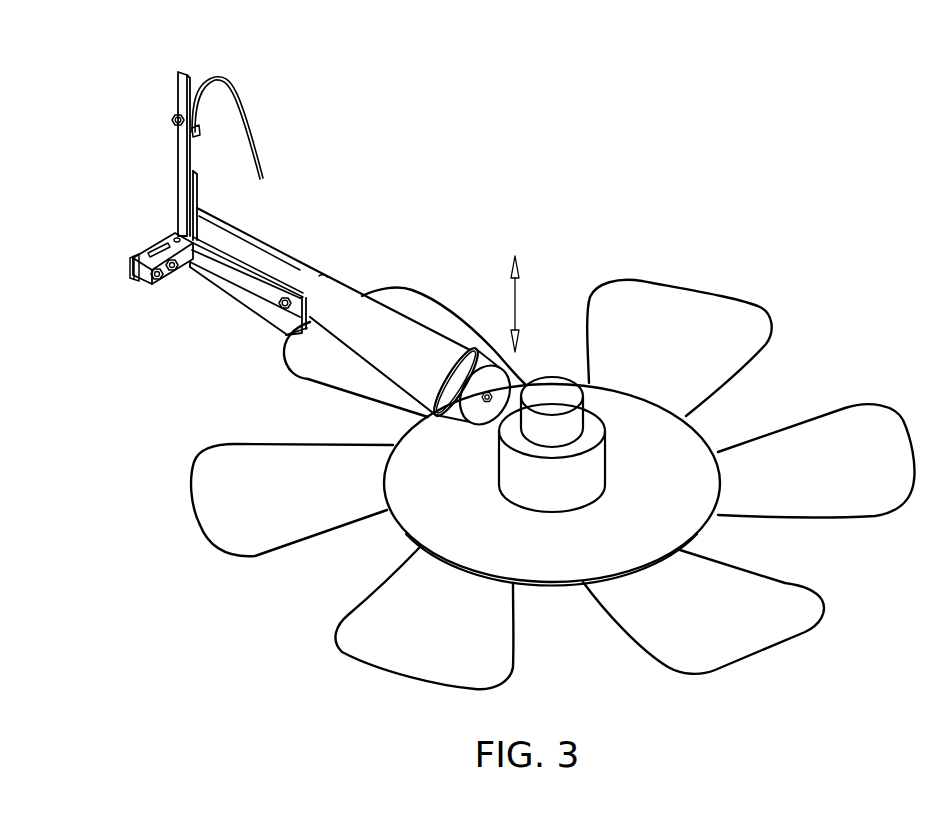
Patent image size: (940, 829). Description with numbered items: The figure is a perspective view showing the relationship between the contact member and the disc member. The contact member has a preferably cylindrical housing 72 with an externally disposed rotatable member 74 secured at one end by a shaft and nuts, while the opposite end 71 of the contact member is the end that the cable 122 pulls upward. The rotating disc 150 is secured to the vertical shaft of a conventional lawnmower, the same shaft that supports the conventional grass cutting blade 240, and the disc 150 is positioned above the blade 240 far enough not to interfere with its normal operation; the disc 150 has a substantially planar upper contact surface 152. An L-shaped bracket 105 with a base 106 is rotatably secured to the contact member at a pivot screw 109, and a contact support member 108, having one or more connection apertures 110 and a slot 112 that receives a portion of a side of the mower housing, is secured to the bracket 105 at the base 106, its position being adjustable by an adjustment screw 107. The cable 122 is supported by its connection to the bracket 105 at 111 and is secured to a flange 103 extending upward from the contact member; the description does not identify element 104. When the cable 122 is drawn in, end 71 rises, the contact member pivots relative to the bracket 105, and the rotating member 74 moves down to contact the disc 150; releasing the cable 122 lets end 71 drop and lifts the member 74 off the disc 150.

The end of contact member 71 is at (202, 212).
The housing 72 is at (401, 333).
The rotatable member 74 is at (485, 367).
The flange 103 is at (202, 182).
The vertical mounting plate 104 is at (182, 97).
The L-shaped bracket 105 is at (177, 147).
The base 106 is at (256, 306).
The adjustment screw 107 is at (174, 235).
The contact support member 108 is at (170, 232).
The pivot screw 109 is at (287, 296).
The connection apertures 110 is at (172, 271).
The cord connection 111 is at (196, 126).
The slot 112 is at (156, 249).
The cable 122 is at (246, 101).
The rotating disc 150 is at (708, 435).
The upper contact surface 152 is at (693, 523).
The grass cutting blade 240 is at (865, 422).